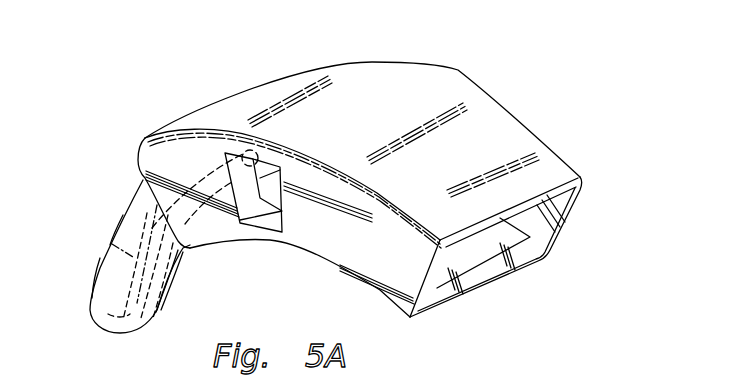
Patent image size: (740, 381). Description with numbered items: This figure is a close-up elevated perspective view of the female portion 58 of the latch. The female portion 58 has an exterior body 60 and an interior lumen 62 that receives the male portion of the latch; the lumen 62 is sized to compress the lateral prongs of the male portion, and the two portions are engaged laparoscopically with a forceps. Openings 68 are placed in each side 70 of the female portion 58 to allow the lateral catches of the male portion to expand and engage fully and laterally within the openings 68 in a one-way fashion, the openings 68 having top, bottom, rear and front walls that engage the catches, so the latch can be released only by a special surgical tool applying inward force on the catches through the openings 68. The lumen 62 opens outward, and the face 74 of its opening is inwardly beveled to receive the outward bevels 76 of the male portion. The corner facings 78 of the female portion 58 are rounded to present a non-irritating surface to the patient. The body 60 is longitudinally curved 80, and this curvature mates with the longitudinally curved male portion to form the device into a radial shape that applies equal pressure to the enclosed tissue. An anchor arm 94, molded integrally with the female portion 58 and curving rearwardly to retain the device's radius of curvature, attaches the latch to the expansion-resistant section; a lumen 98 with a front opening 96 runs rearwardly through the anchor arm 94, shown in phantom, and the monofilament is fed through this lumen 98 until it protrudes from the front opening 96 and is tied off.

The female portion 58 is at (536, 98).
The exterior body 60 is at (373, 124).
The interior lumen 62 is at (558, 270).
The side openings 68 is at (250, 231).
The side 70 is at (384, 258).
The face of the opening of the lumen 74 is at (558, 209).
The outward bevels 76 is at (670, 380).
The corner facings 78 is at (371, 200).
The longitudinal curvature 80 is at (313, 64).
The anchor arm 94 is at (118, 215).
The front opening 96 is at (247, 152).
The lumen 98 is at (111, 243).